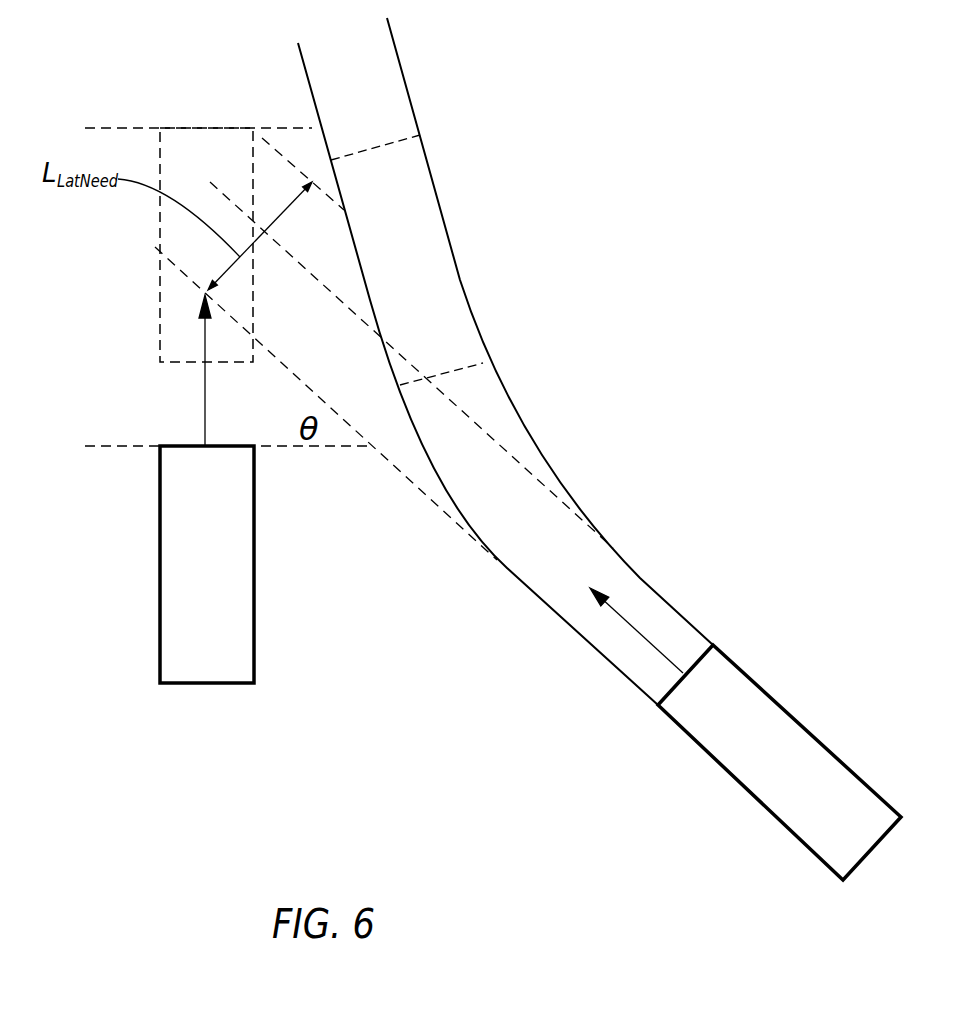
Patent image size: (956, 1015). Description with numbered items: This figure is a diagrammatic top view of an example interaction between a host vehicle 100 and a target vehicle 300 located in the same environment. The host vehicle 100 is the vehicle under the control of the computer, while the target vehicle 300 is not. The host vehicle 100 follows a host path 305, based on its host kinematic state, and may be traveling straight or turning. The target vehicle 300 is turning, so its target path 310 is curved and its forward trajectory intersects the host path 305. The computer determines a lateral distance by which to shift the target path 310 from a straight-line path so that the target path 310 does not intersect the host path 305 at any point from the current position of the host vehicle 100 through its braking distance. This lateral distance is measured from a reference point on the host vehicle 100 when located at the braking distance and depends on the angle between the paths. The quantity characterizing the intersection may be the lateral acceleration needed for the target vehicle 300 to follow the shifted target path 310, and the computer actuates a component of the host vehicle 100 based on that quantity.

The host vehicle 100 is at (255, 627).
The target vehicle 300 is at (707, 752).
The host path 305 is at (205, 413).
The target path 310 is at (515, 402).